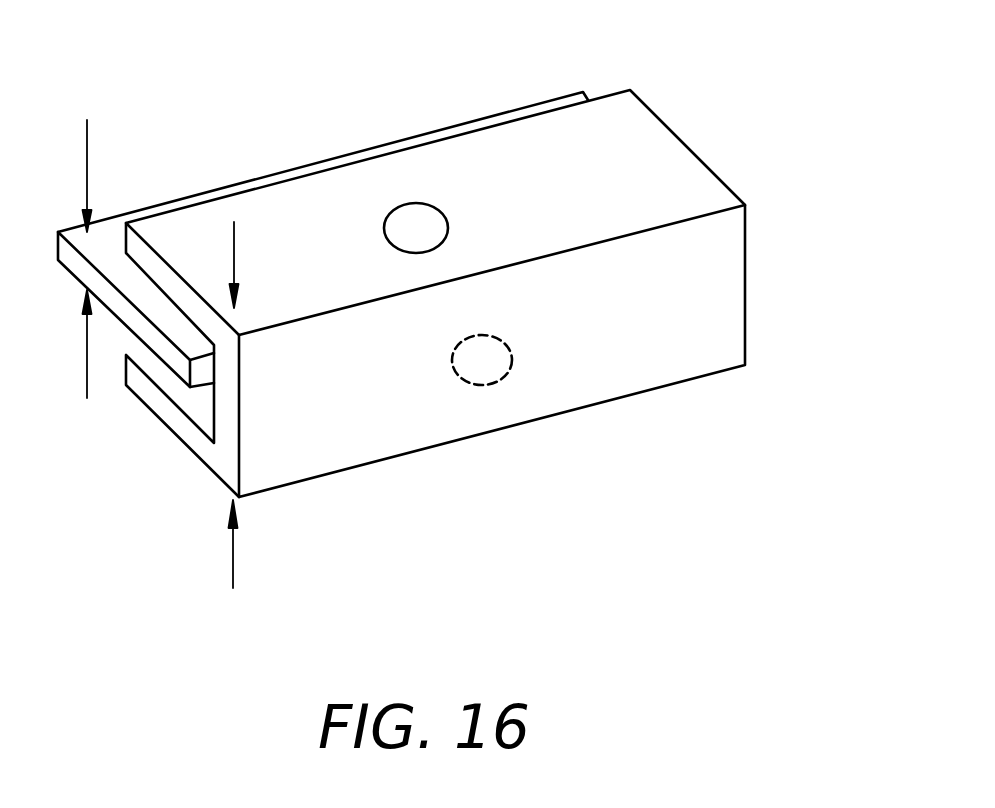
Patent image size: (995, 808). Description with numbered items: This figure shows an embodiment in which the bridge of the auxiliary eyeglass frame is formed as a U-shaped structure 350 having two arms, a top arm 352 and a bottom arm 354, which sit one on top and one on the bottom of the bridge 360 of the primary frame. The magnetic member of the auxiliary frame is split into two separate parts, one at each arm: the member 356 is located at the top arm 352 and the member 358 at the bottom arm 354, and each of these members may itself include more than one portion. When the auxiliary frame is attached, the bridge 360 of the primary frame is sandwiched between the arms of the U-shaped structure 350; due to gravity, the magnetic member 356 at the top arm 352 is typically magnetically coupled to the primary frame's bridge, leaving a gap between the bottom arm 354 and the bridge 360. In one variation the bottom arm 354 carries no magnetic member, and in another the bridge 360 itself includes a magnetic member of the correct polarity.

The U-shaped structure 350 is at (483, 308).
The top arm 352 is at (665, 152).
The bottom arm 354 is at (177, 420).
The magnetic member 356 is at (427, 203).
The magnetic member 358 is at (495, 378).
The bridge of the primary frame 360 is at (308, 162).